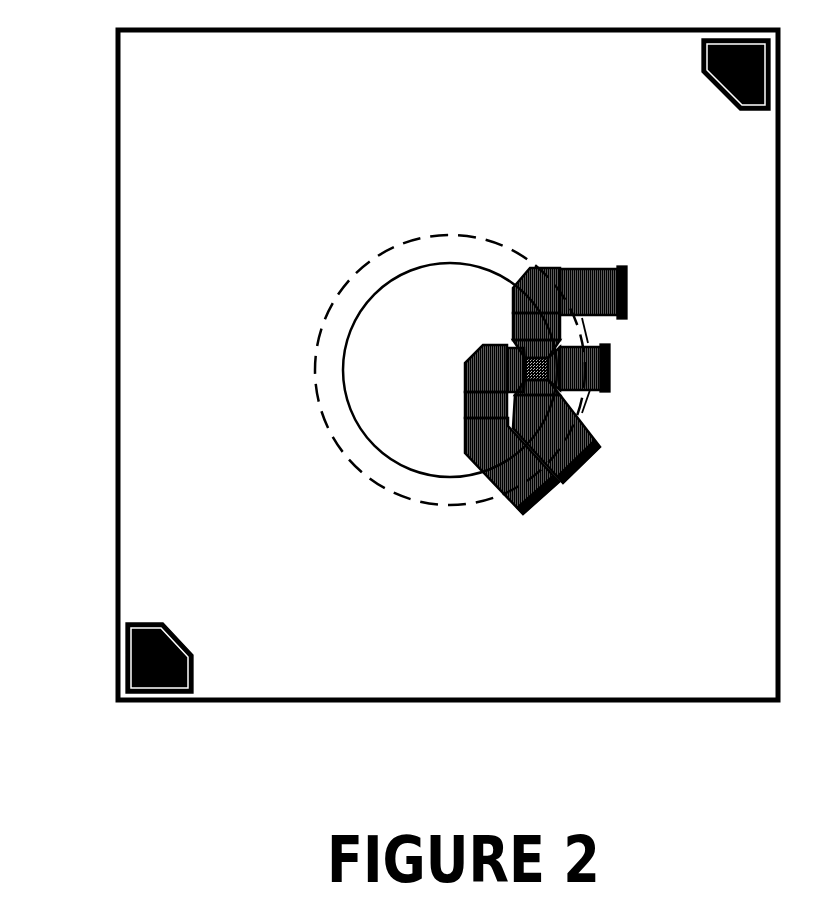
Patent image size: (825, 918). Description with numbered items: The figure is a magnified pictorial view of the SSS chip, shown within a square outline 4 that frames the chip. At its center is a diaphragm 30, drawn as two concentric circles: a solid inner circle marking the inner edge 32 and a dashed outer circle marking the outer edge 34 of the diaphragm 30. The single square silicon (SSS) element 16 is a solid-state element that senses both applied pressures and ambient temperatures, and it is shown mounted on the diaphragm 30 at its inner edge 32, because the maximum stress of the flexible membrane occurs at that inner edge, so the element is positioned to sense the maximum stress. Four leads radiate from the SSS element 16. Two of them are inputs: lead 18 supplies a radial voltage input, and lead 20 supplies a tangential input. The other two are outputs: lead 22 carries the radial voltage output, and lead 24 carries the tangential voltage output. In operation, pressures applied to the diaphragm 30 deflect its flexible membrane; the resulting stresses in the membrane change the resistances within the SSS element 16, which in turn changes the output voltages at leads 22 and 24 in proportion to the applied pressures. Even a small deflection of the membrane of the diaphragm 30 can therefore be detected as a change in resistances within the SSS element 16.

The cover panel 4 is at (150, 137).
The single square silicon element 16 is at (572, 402).
The lead 18 is at (598, 254).
The lead 20 is at (632, 373).
The lead 22 is at (606, 471).
The lead 24 is at (541, 527).
The diaphragm 30 is at (421, 372).
The inner edge 32 is at (441, 487).
The outer edge 34 is at (357, 485).